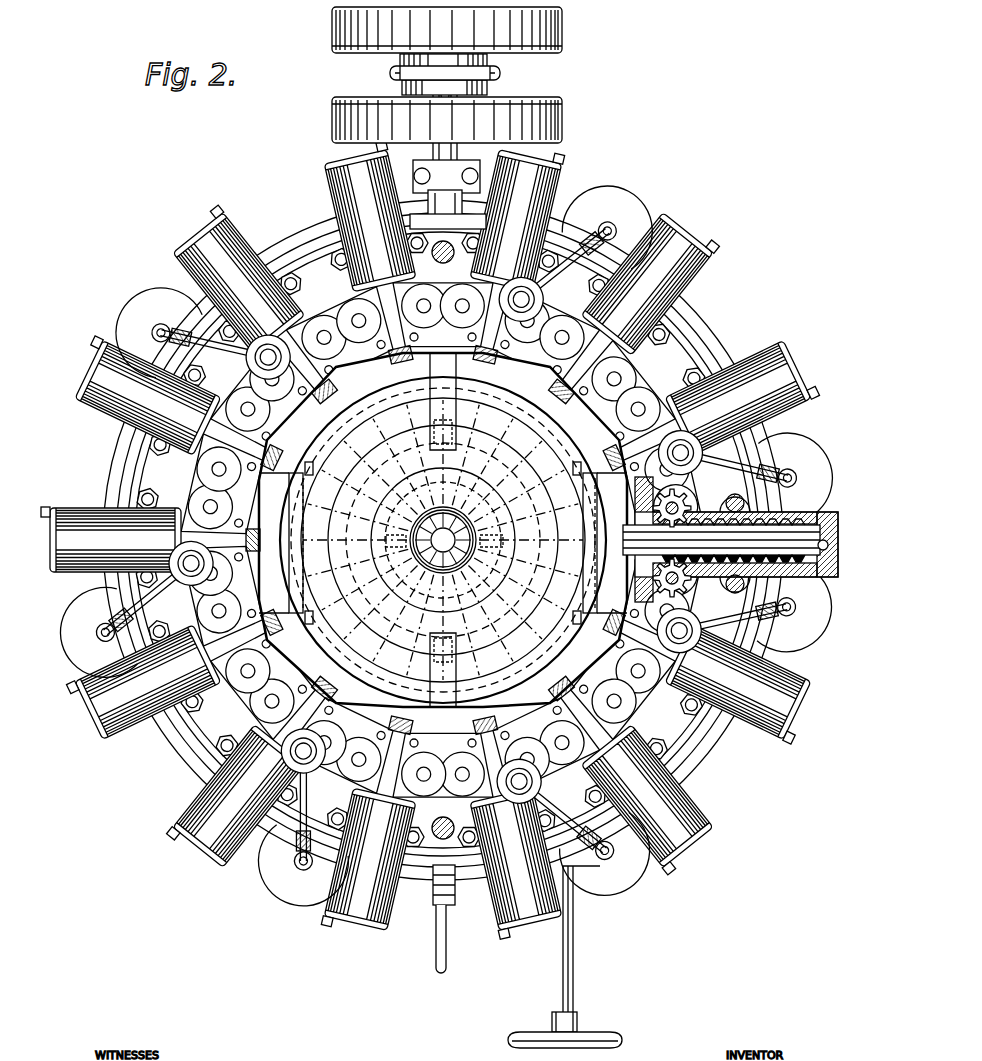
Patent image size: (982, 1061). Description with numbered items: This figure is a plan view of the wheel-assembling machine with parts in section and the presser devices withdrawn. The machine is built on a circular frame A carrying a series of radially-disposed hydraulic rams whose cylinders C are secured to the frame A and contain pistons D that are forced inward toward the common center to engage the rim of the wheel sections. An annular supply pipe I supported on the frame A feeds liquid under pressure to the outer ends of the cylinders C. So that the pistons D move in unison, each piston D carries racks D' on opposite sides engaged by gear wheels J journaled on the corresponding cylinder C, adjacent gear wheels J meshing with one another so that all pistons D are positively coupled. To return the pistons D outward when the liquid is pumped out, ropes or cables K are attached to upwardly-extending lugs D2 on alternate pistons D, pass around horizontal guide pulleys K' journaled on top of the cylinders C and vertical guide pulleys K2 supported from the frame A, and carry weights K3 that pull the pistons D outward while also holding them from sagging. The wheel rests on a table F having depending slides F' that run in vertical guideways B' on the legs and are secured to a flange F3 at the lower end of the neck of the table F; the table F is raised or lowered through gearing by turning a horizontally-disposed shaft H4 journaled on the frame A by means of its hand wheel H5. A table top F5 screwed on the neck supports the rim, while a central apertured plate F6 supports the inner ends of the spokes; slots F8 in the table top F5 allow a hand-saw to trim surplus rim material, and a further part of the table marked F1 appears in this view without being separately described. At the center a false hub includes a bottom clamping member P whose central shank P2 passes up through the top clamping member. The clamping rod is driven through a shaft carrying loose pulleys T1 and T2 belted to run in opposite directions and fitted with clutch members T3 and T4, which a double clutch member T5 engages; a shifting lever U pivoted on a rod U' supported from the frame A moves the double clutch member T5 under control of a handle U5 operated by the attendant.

The circular frame A is at (312, 240).
The annular supply pipe I is at (560, 215).
The cylinders C is at (346, 185).
The gear wheels J is at (420, 330).
The ropes or cables K is at (440, 540).
The guide pulleys K' is at (437, 540).
The guide pulleys K2 is at (608, 228).
The weights K3 is at (630, 198).
The table F is at (443, 531).
The depending slides F' is at (443, 543).
The inner ring F1 is at (552, 565).
The flange F3 is at (445, 690).
The table top F5 is at (392, 402).
The central apertured plate F6 is at (478, 480).
The slots F8 is at (432, 370).
The bottom clamping member P is at (460, 566).
The central shank P2 is at (447, 470).
The pistons D is at (730, 543).
The racks D' is at (701, 545).
The upwardly-extending lugs D2 is at (465, 352).
The vertical guideways B' is at (443, 539).
The pulley T1 is at (338, 124).
The pulley T2 is at (338, 39).
The clutch member T3 is at (416, 96).
The clutch member T4 is at (422, 60).
The double clutch member T5 is at (402, 74).
The shifting lever U is at (459, 73).
The rod U' is at (448, 154).
The handle U5 is at (448, 972).
The horizontally-disposed shaft H4 is at (575, 955).
The hand wheel H5 is at (596, 1034).